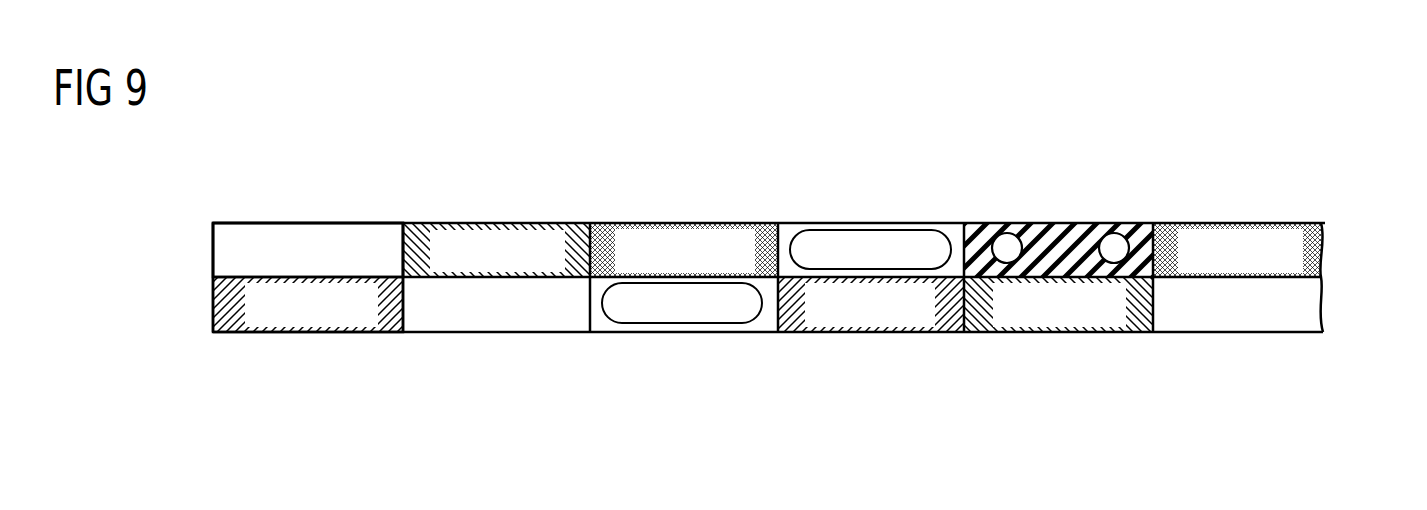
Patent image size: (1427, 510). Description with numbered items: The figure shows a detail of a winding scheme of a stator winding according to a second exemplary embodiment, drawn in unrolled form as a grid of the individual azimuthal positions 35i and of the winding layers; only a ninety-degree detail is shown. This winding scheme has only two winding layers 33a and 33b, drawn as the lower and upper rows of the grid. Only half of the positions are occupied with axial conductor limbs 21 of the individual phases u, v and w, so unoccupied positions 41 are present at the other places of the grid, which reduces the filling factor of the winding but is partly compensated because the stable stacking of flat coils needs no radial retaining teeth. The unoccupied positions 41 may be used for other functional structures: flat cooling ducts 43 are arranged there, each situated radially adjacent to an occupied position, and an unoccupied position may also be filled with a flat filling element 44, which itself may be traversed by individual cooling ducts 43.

The axial conductor limb 21 is at (489, 208).
The winding layer 33a is at (1342, 308).
The winding layer 33b is at (1342, 248).
The azimuthal position 35i is at (400, 218).
The unoccupied position 41 is at (228, 245).
The cooling duct 43 is at (873, 230).
The filling element 44 is at (1060, 223).